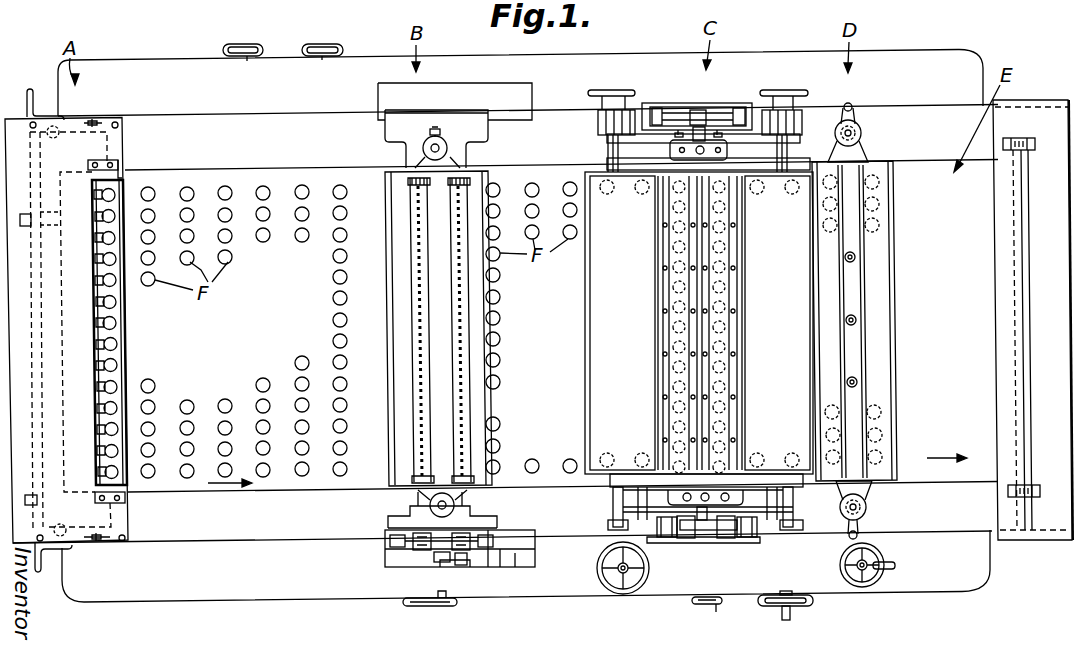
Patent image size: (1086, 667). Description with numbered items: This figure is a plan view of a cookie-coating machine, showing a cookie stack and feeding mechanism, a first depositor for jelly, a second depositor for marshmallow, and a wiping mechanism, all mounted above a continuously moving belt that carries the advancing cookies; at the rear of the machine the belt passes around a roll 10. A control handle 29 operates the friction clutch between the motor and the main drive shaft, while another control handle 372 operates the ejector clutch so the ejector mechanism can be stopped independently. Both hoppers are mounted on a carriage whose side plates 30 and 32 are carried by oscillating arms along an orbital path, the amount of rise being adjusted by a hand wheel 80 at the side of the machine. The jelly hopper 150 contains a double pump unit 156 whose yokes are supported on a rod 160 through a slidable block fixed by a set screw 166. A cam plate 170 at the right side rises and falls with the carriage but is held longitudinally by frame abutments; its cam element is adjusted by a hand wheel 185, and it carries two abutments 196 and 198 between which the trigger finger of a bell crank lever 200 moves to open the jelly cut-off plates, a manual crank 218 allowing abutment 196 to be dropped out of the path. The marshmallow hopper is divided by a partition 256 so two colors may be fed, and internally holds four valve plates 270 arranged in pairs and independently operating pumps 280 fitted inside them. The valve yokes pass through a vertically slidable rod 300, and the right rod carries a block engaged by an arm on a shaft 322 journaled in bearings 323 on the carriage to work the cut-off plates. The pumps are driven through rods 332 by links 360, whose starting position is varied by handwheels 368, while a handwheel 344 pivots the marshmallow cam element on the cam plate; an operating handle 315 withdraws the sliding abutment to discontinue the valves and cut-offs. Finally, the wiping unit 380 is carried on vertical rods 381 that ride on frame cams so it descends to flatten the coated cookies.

The roll 10 is at (1026, 150).
The control handle 29 is at (330, 44).
The side plate 30 is at (398, 549).
The side plate 32 is at (460, 110).
The hand wheel 80 is at (796, 608).
The hopper 150 is at (493, 402).
The double pump unit 156 is at (452, 345).
The rod 160 is at (447, 153).
The set screw 166 is at (440, 131).
The cam plate 170 is at (497, 563).
The hand wheel 185 is at (600, 568).
The abutment 196 is at (444, 566).
The abutment 198 is at (517, 568).
The bell crank lever 200 is at (461, 567).
The manual crank 218 is at (423, 606).
The partition 256 is at (713, 284).
The valve plates 270 is at (725, 338).
The pumps 280 is at (712, 262).
The rod 300 is at (710, 493).
The operating handle 315 is at (721, 605).
The shaft 322 is at (742, 537).
The bearings 323 is at (662, 537).
The rods 332 is at (685, 494).
The handwheel 344 is at (878, 554).
The links 360 is at (757, 508).
The handwheel 368 is at (612, 91).
The control handle 372 is at (242, 45).
The vertically reciprocable unit 380 is at (891, 330).
The vertical rods 381 is at (853, 106).